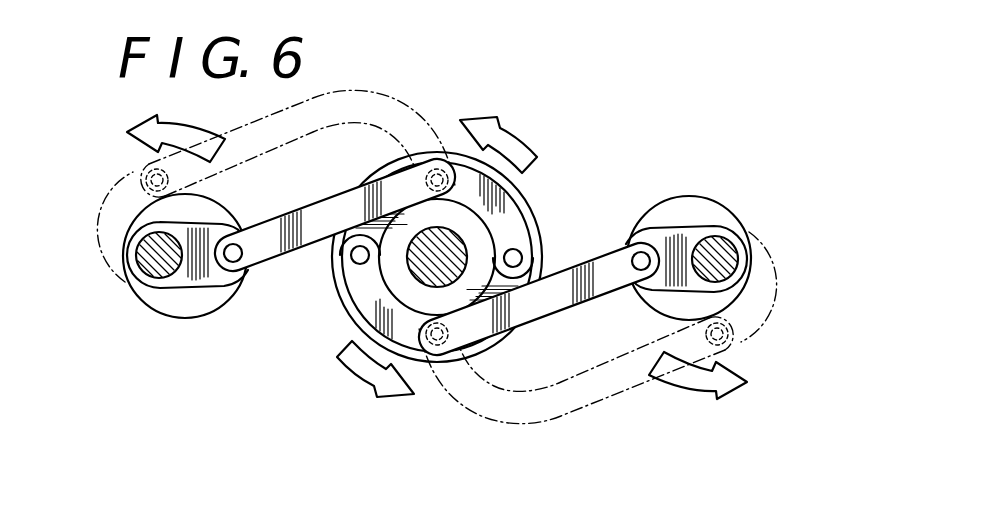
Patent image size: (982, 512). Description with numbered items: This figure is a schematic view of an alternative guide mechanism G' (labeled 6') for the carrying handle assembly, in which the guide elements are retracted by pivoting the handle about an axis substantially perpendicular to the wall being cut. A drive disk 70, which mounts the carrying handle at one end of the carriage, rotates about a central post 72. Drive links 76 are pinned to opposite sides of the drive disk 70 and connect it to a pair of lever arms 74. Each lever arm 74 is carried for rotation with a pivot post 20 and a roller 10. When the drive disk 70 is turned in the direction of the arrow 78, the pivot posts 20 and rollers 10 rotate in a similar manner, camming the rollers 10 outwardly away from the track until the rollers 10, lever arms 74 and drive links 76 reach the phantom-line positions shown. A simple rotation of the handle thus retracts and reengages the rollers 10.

The roller 10 is at (193, 307).
The pivot post 20 is at (144, 268).
The drive disk 70 is at (485, 350).
The central post 72 is at (343, 301).
The lever arm 74 is at (183, 284).
The drive link 76 is at (276, 220).
The arrow 78 is at (518, 140).
The guide mechanism 6' is at (645, 121).